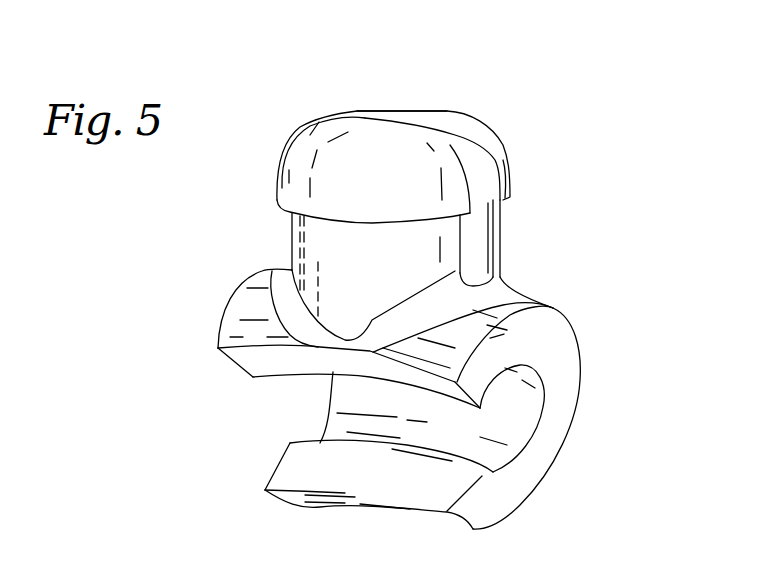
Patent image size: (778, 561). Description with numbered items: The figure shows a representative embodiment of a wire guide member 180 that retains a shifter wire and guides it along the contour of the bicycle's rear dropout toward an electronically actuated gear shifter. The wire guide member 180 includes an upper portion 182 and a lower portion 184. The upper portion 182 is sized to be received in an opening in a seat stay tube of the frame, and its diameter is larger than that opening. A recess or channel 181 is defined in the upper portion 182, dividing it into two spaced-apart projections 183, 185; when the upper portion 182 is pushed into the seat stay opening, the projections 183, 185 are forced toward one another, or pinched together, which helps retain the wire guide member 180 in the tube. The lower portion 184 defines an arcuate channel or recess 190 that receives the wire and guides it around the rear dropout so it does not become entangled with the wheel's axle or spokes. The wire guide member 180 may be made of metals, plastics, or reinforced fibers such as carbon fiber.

The wire guide member 180 is at (593, 146).
The recess or channel 181 is at (476, 283).
The upper portion 182 is at (470, 122).
The projection 183 is at (295, 138).
The lower portion 184 is at (583, 363).
The projection 185 is at (402, 110).
The arcuate channel or recess 190 is at (523, 412).